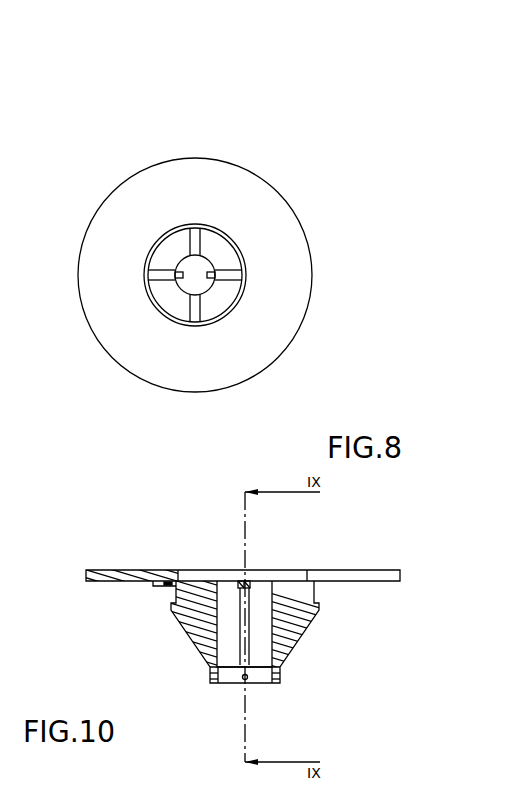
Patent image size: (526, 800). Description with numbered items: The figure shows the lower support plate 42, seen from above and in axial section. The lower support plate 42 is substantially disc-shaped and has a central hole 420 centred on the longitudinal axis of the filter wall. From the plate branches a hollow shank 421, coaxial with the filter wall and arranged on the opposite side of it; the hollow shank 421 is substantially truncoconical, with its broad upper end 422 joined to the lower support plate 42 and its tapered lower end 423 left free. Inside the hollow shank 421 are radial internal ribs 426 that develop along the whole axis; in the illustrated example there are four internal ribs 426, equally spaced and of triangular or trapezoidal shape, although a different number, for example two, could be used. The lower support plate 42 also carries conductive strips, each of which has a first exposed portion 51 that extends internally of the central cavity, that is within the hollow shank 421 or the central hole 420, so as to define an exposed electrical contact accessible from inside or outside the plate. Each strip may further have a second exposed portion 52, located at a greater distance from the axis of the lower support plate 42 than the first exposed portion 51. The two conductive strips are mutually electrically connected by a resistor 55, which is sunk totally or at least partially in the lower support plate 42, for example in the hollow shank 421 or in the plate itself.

In FIG. 8, the lower support plate 42 is at (100, 145).
In FIG. 10, the lower support plate 42 is at (175, 512).
In FIG. 8, the first exposed portion 51 is at (200, 252).
In FIG. 8, the second exposed portion 52 is at (140, 277).
In FIG. 8, the resistor 55 is at (232, 318).
In FIG. 10, the resistor 55 is at (167, 591).
In FIG. 10, the central hole 420 is at (298, 567).
In FIG. 8, the hollow shank 421 is at (218, 253).
In FIG. 10, the hollow shank 421 is at (288, 622).
In FIG. 10, the upper end 422 is at (307, 586).
In FIG. 8, the lower end 423 is at (214, 266).
In FIG. 10, the lower end 423 is at (282, 682).
In FIG. 10, the radial internal ribs 426 is at (240, 640).